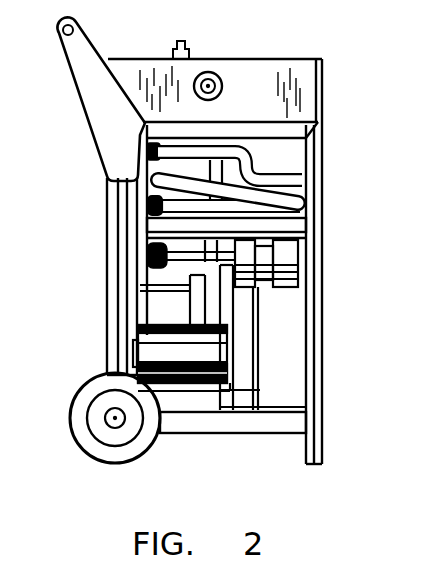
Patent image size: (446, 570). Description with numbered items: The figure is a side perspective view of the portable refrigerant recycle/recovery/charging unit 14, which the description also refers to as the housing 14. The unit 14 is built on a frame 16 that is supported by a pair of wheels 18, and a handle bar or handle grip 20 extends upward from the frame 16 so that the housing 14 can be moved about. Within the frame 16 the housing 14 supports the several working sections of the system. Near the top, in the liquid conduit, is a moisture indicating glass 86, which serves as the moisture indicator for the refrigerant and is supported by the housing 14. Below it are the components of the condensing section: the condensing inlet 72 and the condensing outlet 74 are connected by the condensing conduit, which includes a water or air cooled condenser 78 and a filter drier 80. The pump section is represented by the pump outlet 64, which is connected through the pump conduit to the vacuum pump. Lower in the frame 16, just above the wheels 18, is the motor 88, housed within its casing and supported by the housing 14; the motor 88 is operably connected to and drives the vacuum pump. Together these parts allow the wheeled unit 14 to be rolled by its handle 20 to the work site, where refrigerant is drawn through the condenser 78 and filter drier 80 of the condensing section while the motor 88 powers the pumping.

The portable recycle/recovery/charging unit 14 is at (373, 126).
The frame 16 is at (313, 316).
The wheels 18 is at (97, 375).
The handle bar 20 is at (62, 33).
The pump outlet 64 is at (226, 172).
The condensing inlet 72 is at (110, 192).
The condensing outlet 74 is at (152, 268).
The condenser 78 is at (302, 205).
The filter drier 80 is at (290, 250).
The moisture indicating glass 86 is at (218, 73).
The motor 88 is at (167, 392).